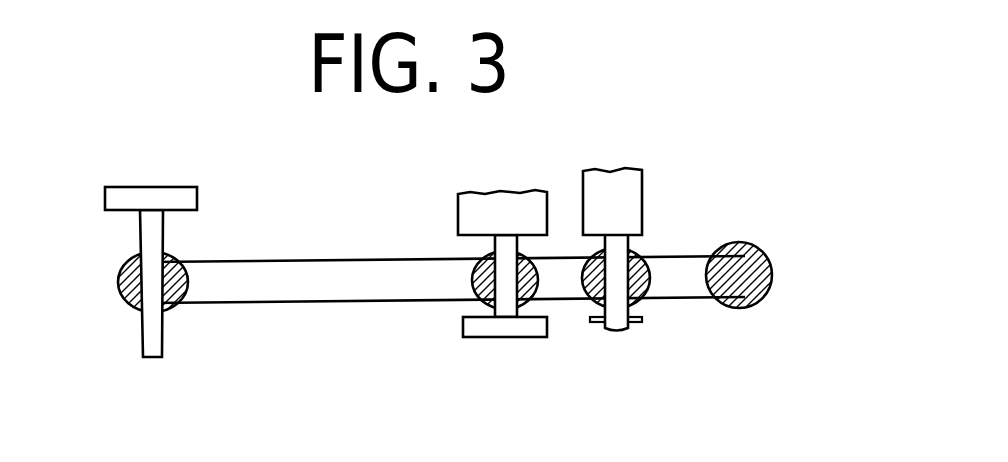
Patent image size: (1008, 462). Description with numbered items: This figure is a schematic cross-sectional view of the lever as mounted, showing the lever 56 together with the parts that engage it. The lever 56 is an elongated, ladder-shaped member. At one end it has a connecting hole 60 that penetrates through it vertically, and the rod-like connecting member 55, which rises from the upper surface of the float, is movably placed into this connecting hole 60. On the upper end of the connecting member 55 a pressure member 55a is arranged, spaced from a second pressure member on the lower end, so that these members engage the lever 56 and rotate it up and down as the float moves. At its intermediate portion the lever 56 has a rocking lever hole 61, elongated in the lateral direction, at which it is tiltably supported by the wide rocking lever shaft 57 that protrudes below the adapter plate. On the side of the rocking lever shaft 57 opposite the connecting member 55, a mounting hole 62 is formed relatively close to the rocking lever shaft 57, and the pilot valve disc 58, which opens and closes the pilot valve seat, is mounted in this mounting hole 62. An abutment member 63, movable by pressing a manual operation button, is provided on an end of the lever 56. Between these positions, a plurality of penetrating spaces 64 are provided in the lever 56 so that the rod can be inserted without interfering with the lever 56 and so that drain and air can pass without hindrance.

The connecting member 55 is at (160, 231).
The pressure member 55a is at (163, 193).
The lever 56 is at (452, 272).
The rocking lever shaft 57 is at (507, 337).
The pilot valve disc 58 is at (642, 192).
The connecting hole 60 is at (137, 313).
The rocking lever hole 61 is at (477, 302).
The mounting hole 62 is at (640, 303).
The abutment member 63 is at (762, 247).
The penetrating spaces 64 is at (315, 305).